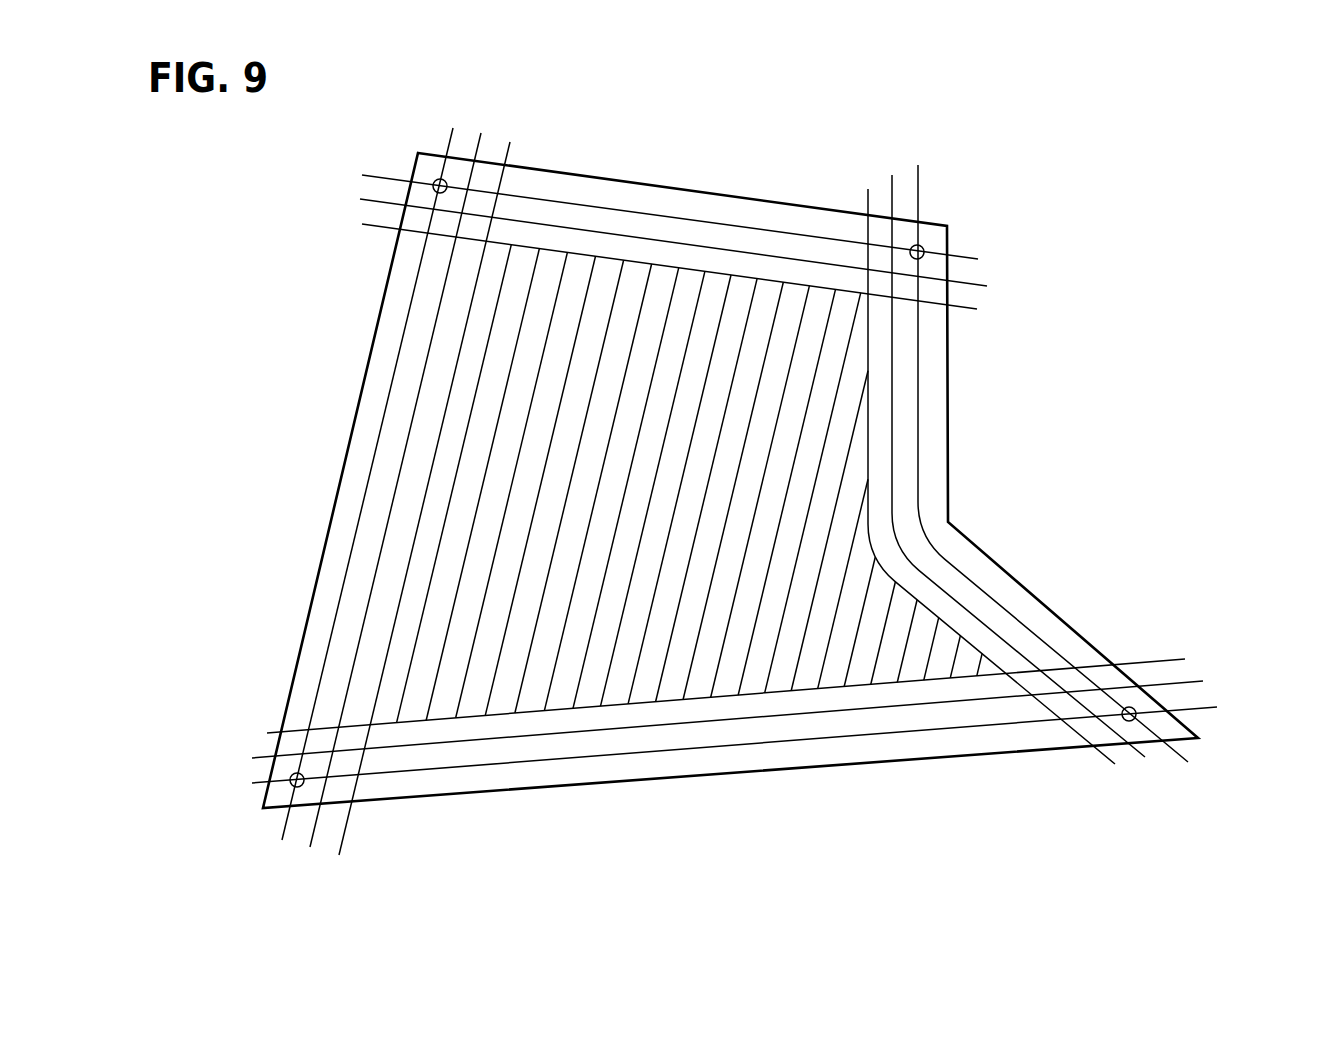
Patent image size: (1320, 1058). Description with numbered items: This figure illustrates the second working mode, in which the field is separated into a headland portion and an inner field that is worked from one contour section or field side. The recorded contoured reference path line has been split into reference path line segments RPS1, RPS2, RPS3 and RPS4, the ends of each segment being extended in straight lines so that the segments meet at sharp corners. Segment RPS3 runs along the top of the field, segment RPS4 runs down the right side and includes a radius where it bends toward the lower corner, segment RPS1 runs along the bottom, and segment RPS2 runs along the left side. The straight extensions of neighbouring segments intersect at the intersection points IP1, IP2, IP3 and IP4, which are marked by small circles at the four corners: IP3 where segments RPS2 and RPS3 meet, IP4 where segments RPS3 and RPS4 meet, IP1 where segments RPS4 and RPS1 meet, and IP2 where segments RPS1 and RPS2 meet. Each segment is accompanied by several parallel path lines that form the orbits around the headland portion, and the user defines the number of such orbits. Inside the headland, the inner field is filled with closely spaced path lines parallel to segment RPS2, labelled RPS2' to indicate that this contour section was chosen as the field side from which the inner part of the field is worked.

The intersection point IP1 is at (1148, 718).
The intersection point IP2 is at (292, 787).
The intersection point IP3 is at (433, 183).
The intersection point IP4 is at (923, 248).
The reference path line segment RPS1 is at (660, 758).
The reference path line segment RPS2 is at (381, 491).
The reference pattern set 2' (hatched pattern lines) RPS2' is at (607, 484).
The reference path line segment RPS3 is at (642, 212).
The reference path line segment RPS4 is at (918, 448).